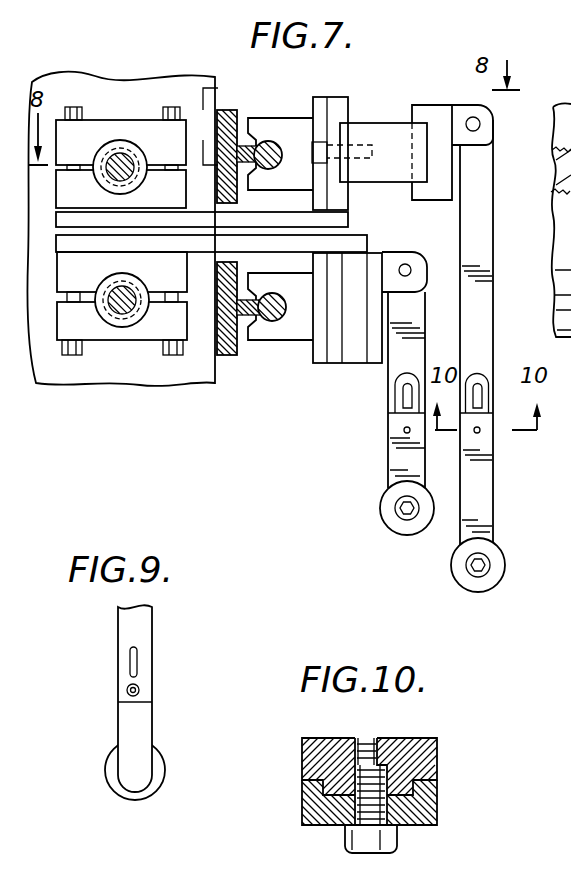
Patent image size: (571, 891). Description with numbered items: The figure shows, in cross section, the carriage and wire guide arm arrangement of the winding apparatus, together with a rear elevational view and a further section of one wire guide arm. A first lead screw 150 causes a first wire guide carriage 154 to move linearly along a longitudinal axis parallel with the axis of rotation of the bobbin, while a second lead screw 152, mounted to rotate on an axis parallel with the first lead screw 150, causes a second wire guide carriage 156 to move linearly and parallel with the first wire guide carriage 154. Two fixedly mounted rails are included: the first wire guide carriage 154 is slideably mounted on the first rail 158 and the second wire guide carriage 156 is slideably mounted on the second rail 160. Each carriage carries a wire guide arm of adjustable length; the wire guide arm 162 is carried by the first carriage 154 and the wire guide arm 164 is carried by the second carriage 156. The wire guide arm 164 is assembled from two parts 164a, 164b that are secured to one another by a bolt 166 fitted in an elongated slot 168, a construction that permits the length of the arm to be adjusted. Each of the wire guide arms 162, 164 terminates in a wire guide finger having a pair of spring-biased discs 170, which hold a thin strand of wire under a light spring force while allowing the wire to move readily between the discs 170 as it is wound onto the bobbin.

In FIG. 7, the first lead screw 150 is at (122, 314).
In FIG. 7, the second lead screw 152 is at (120, 152).
In FIG. 7, the first wire guide carriage 154 is at (155, 333).
In FIG. 7, the second wire guide carriage 156 is at (152, 125).
In FIG. 7, the first rail 158 is at (272, 321).
In FIG. 7, the second rail 160 is at (268, 141).
In FIG. 7, the wire guide arm 162 is at (381, 412).
In FIG. 7, the wire guide arm 164 is at (449, 348).
In FIG. 9, the wire guide arm part 164a is at (147, 627).
In FIG. 10, the wire guide arm part 164a is at (437, 807).
In FIG. 9, the wire guide arm part 164b is at (147, 723).
In FIG. 10, the wire guide arm part 164b is at (437, 750).
In FIG. 9, the bolt 166 is at (128, 690).
In FIG. 10, the bolt 166 is at (397, 838).
In FIG. 9, the elongated slot 168 is at (136, 660).
In FIG. 9, the spring-biased discs 170 is at (130, 797).